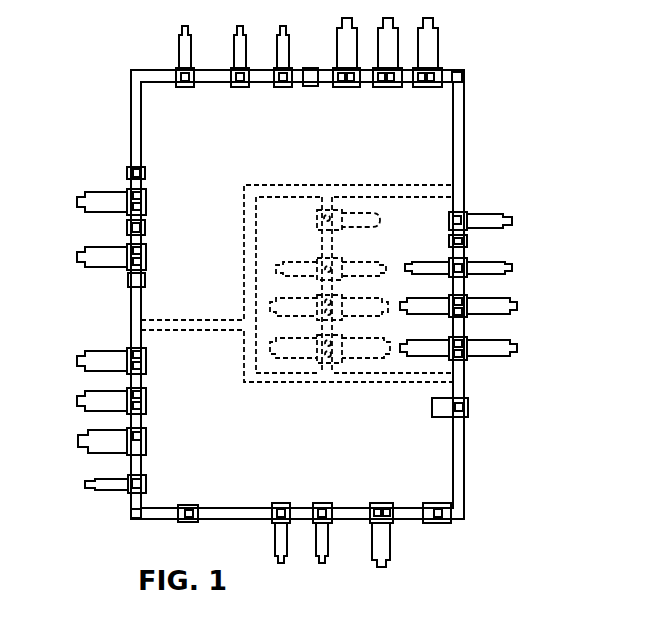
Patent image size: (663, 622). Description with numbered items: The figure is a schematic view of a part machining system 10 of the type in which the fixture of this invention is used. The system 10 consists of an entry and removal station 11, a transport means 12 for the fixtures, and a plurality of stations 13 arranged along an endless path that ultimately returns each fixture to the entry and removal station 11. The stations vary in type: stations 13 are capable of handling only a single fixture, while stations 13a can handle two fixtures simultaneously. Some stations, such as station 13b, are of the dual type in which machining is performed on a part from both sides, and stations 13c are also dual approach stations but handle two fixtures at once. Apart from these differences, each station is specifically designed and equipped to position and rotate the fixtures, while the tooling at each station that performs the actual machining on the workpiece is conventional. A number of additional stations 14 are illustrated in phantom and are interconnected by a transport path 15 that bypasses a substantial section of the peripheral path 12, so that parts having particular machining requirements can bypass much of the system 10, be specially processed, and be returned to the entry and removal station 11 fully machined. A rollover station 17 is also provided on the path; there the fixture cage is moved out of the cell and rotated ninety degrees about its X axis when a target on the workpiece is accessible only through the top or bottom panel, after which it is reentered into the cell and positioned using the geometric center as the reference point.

The system 10 is at (492, 65).
The entry and removal station 11 is at (441, 523).
The transport means 12 is at (465, 470).
The station 13 is at (288, 44).
The station 13a is at (437, 42).
The dual type station 13b is at (492, 262).
The dual approach station 13c is at (495, 300).
The additional station 14 is at (368, 226).
The transport path 15 is at (212, 318).
The rollover station 17 is at (146, 172).